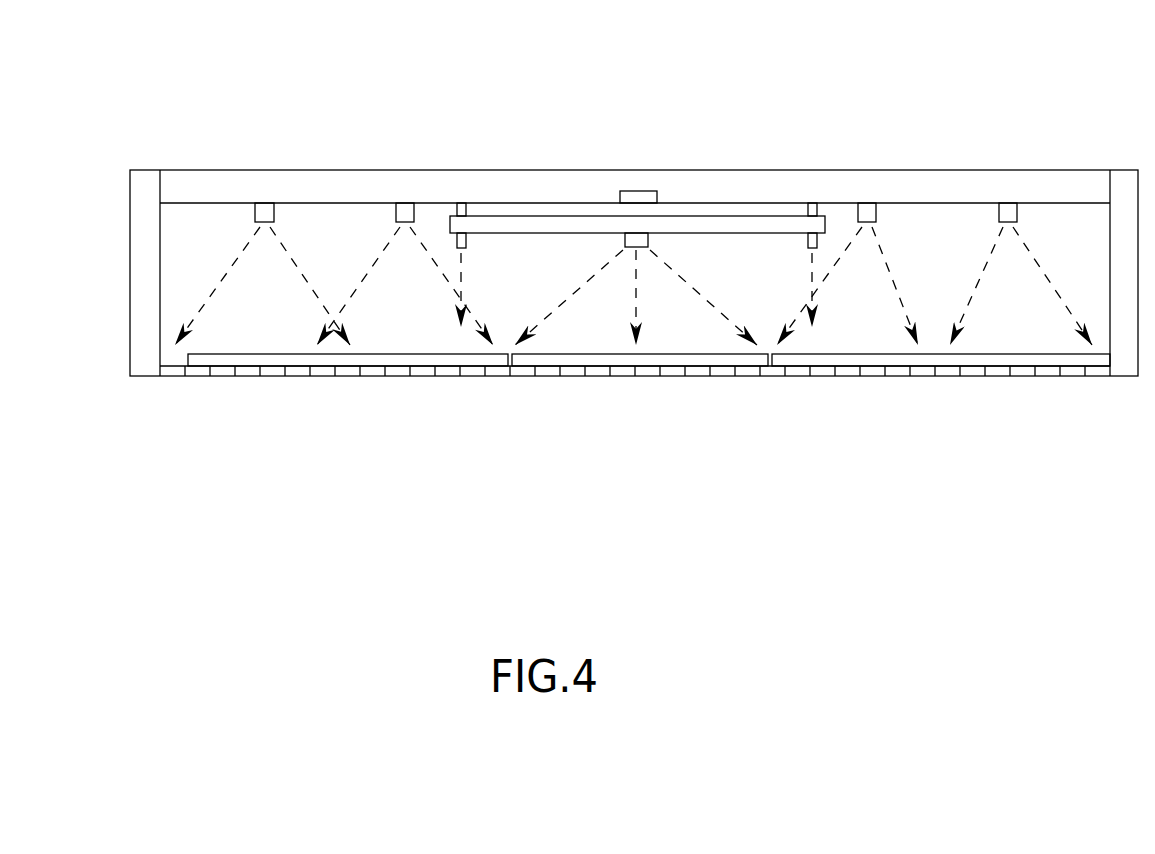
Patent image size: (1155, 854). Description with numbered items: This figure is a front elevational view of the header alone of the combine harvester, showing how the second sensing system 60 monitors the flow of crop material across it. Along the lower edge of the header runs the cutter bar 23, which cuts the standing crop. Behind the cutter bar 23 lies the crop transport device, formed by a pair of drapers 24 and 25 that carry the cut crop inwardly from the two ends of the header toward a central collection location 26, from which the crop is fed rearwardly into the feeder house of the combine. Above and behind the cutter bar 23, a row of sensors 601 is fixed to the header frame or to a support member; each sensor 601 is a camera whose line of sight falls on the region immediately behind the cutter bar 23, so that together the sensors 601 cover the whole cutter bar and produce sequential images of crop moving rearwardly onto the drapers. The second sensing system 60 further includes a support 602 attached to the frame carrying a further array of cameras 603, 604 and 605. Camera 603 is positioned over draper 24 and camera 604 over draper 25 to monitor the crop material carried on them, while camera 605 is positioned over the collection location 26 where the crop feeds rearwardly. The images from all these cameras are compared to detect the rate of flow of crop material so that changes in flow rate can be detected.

The second sensing system 60 is at (945, 242).
The sensor 601 is at (267, 210).
The support 602 is at (600, 223).
The camera 603 is at (466, 241).
The camera 604 is at (817, 243).
The camera 605 is at (641, 241).
The cutter bar 23 is at (698, 372).
The draper 24 is at (344, 357).
The draper 25 is at (873, 360).
The collection location 26 is at (568, 358).